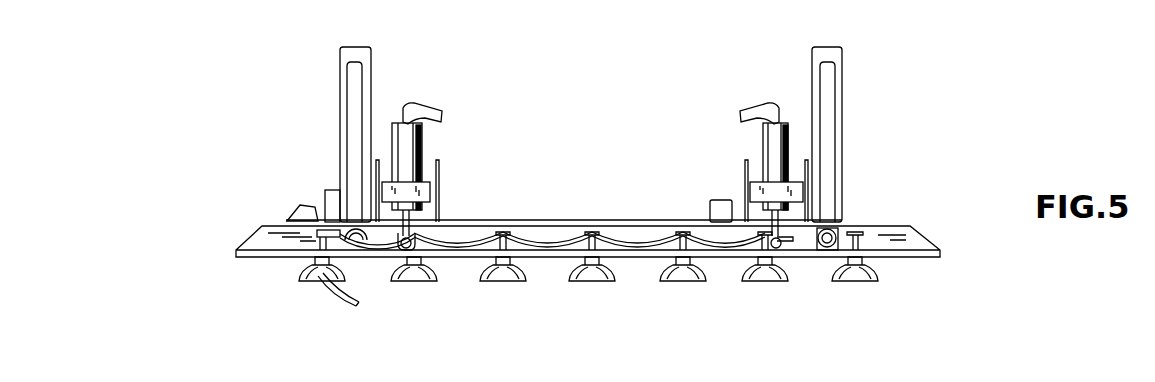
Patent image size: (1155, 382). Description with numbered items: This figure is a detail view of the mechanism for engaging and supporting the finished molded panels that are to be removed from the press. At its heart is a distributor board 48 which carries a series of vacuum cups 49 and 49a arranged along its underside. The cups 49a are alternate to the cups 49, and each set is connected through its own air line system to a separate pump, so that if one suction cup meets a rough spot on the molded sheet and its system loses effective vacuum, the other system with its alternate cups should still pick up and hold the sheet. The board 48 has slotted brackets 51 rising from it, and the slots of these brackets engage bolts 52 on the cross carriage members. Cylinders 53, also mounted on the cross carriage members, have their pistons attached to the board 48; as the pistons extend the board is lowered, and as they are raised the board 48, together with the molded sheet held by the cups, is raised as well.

The distributor board 48 is at (918, 256).
The vacuum cups 49 is at (314, 279).
The vacuum cups 49a is at (415, 279).
The slotted brackets 51 is at (371, 68).
The bolts 52 is at (836, 231).
The cylinders 53 is at (421, 150).